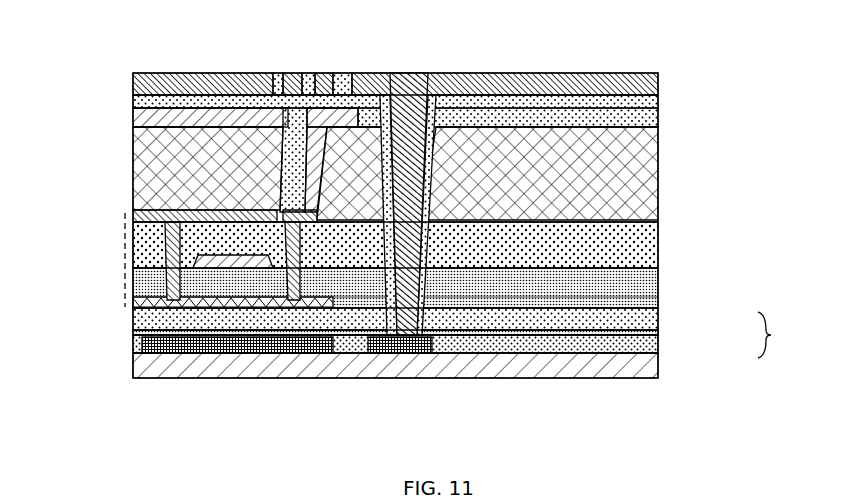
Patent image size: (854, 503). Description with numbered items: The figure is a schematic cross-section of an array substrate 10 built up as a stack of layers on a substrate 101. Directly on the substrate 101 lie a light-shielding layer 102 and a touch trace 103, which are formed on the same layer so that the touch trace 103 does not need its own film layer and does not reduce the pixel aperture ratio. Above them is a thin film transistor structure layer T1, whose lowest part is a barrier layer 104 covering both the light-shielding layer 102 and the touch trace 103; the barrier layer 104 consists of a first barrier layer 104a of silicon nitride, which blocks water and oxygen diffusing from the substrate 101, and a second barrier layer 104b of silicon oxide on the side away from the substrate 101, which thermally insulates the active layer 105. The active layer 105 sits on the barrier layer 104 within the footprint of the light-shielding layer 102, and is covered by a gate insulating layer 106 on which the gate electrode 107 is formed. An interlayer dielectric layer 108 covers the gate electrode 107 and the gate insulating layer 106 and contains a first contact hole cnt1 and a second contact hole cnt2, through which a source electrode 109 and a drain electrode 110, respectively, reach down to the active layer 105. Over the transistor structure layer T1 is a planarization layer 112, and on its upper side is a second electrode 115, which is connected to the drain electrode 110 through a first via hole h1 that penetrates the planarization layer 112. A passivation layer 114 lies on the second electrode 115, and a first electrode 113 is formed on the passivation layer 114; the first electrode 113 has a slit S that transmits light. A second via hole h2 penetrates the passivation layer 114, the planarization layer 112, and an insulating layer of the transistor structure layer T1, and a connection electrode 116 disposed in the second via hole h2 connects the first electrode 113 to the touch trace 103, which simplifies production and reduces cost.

The array substrate 10 is at (642, 30).
The substrate 101 is at (658, 365).
The light-shielding layer 102 is at (240, 353).
The touch trace 103 is at (412, 353).
The barrier layer 104 is at (784, 335).
The first barrier layer 104a is at (658, 342).
The second barrier layer 104b is at (658, 315).
The active layer 105 is at (157, 303).
The gate insulating layer 106 is at (658, 280).
The gate electrode 107 is at (197, 257).
The interlayer dielectric layer 108 is at (658, 243).
The source electrode 109 is at (153, 212).
The drain electrode 110 is at (287, 213).
The planarization layer 112 is at (658, 198).
The first electrode 113 is at (203, 73).
The passivation layer 114 is at (658, 100).
The second electrode 115 is at (133, 120).
The connection electrode 116 is at (430, 76).
The first via hole h1 is at (298, 118).
The second via hole h2 is at (398, 76).
The slit S is at (306, 78).
The thin film transistor structure layer T1 is at (118, 309).
The first contact hole cnt1 is at (174, 300).
The second contact hole cnt2 is at (293, 300).